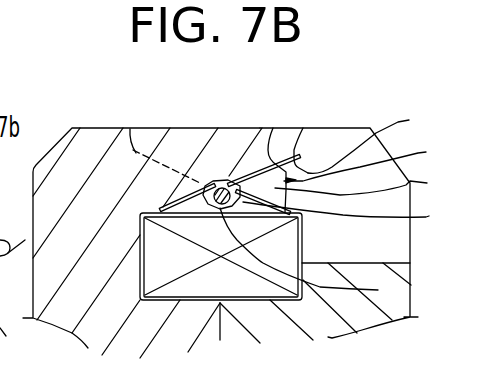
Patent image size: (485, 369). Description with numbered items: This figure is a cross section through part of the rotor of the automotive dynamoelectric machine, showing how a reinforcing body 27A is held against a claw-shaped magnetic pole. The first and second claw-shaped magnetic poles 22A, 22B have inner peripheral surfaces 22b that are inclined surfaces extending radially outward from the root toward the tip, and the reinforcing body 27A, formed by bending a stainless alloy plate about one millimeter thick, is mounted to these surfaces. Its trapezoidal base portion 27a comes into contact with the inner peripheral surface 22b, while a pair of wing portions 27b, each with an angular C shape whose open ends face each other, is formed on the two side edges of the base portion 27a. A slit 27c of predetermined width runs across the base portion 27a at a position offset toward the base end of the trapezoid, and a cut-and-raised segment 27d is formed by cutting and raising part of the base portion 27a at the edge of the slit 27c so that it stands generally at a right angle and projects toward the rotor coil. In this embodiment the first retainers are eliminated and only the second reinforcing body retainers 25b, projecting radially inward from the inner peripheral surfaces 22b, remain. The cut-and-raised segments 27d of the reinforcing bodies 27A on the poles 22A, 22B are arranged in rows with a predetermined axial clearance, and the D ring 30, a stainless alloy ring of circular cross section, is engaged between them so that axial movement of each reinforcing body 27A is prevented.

The first claw-shaped magnetic pole 22A is at (331, 150).
The second claw-shaped magnetic pole 22B is at (97, 150).
The inner peripheral surface 22b is at (273, 128).
The second reinforcing body retainer 25b is at (155, 207).
The base portion 27a is at (380, 137).
The reinforcing body 27A is at (377, 161).
The wing portion 27b is at (372, 186).
The slit 27c is at (216, 183).
The cut-and-raised segment 27d is at (214, 185).
The D ring 30 is at (378, 290).